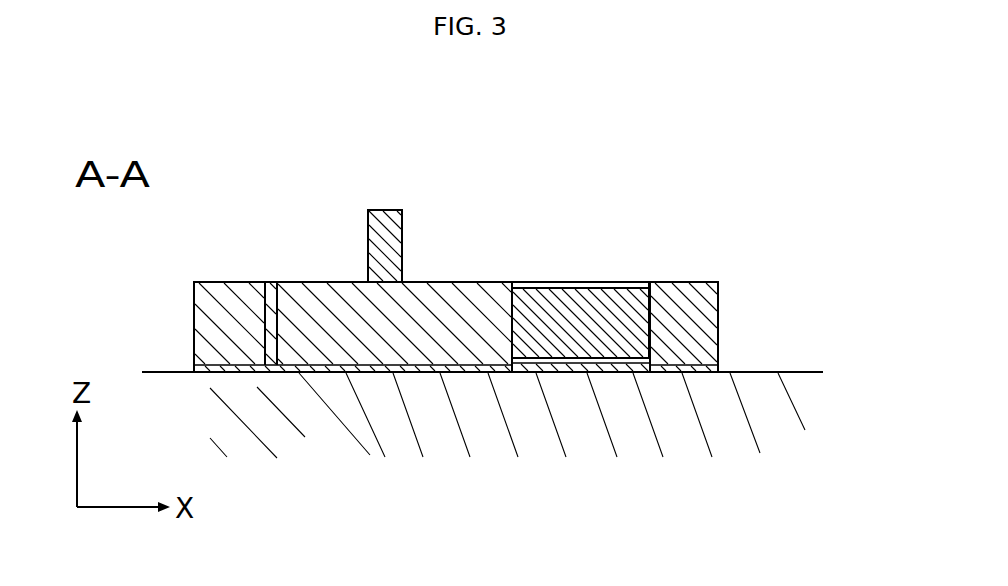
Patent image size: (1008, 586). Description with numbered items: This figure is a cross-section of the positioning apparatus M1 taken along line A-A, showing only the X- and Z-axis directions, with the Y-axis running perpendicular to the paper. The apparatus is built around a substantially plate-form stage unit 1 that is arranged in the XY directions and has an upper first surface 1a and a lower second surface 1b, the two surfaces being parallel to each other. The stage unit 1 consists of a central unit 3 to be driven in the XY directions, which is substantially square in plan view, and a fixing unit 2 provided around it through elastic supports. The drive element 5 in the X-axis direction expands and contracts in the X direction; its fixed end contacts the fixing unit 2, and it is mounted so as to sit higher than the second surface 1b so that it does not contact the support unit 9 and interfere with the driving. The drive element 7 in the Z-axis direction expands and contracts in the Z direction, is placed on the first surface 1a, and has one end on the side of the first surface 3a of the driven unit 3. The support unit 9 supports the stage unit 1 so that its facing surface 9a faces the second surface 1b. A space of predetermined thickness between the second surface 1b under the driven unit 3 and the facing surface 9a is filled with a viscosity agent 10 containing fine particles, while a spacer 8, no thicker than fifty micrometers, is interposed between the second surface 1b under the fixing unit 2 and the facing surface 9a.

The stage unit 1 is at (192, 265).
The first surface 1a is at (673, 281).
The second surface 1b is at (704, 360).
The fixing unit 2 is at (668, 298).
The unit to be driven in the XY directions 3 is at (308, 312).
The first surface of the unit to be driven 3a is at (418, 282).
The drive element in the X-axis direction 5 is at (603, 300).
The drive element in the Z-axis direction 7 is at (383, 235).
The spacer 8 is at (218, 367).
The support unit 9 is at (708, 385).
The facing surface 9a is at (778, 372).
The viscosity agent 10 is at (421, 367).
The positioning apparatus M1 is at (603, 243).